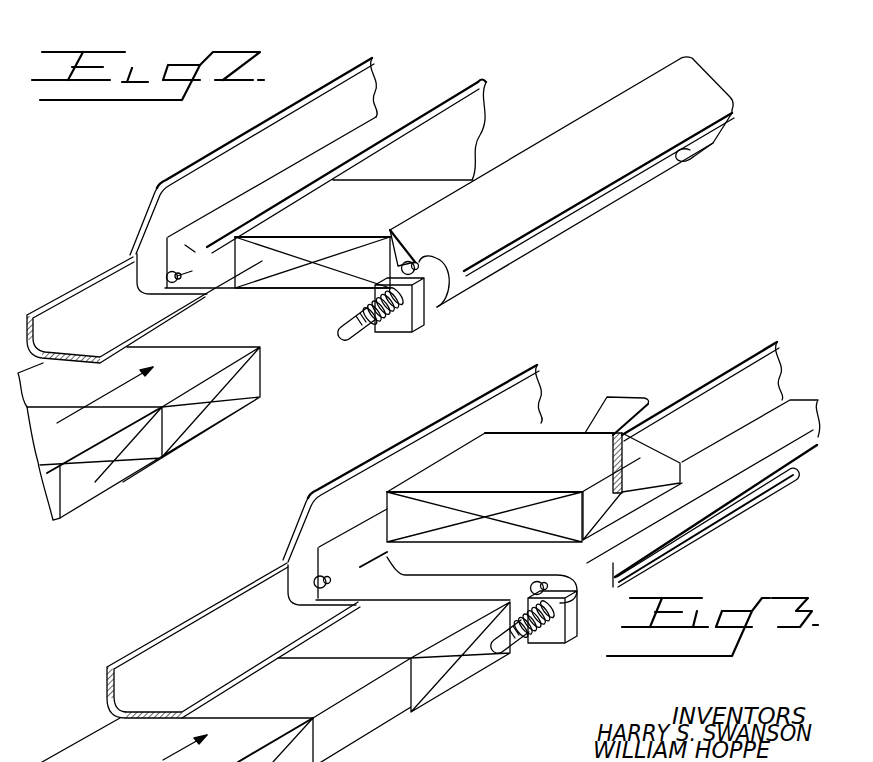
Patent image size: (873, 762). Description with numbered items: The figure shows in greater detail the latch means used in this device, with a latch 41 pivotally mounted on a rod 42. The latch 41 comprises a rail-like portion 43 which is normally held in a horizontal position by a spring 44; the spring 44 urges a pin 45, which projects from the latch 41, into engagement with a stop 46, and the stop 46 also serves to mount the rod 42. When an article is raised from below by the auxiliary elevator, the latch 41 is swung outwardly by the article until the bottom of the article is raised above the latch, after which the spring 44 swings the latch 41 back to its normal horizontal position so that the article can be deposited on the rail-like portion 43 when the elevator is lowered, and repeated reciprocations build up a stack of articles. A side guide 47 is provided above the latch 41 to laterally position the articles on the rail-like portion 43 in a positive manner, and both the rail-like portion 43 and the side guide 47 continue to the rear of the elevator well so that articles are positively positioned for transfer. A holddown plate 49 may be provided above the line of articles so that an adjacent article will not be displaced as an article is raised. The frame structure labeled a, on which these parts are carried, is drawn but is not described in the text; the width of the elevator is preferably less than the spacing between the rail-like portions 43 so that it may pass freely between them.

In FIG. 2, the latch 41 is at (490, 110).
In FIG. 3, the latch 41 is at (637, 390).
In FIG. 2, the rod 42 is at (352, 343).
In FIG. 3, the rod 42 is at (727, 522).
In FIG. 2, the rail-like portion 43 is at (452, 90).
In FIG. 3, the rail-like portion 43 is at (505, 568).
In FIG. 2, the spring 44 is at (390, 332).
In FIG. 3, the spring 44 is at (530, 647).
In FIG. 2, the pin 45 is at (420, 258).
In FIG. 3, the pin 45 is at (325, 568).
In FIG. 2, the stop 46 is at (424, 326).
In FIG. 3, the stop 46 is at (570, 644).
In FIG. 2, the side guide 47 is at (372, 58).
In FIG. 3, the side guide 47 is at (536, 366).
In FIG. 2, the holddown plate 49 is at (186, 314).
In FIG. 3, the holddown plate 49 is at (340, 627).
In FIG. 2, the conveyor frame a is at (220, 417).
In FIG. 3, the conveyor frame a is at (375, 728).